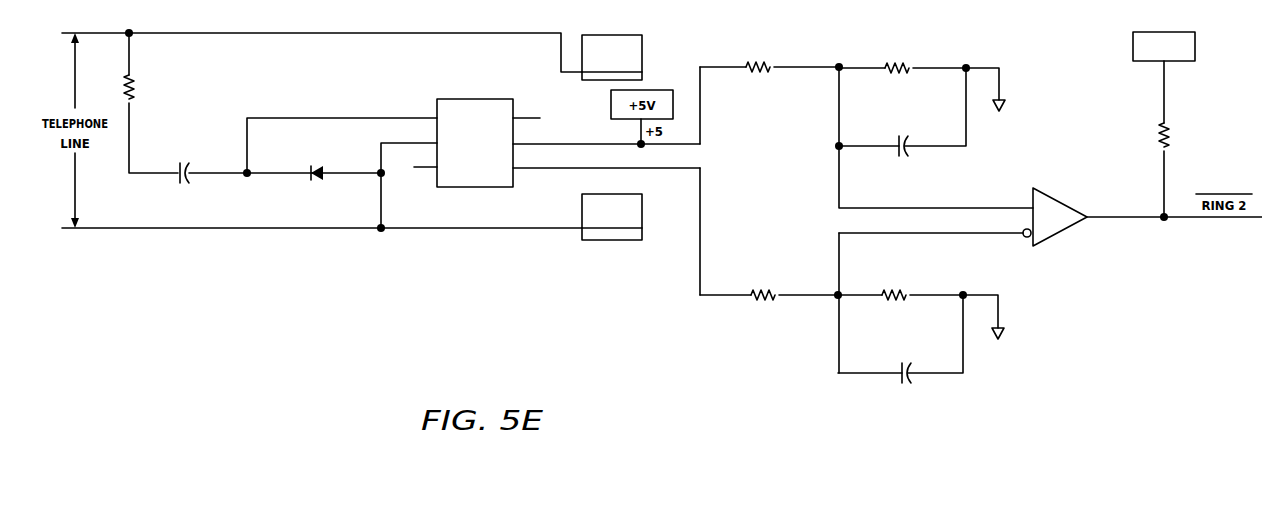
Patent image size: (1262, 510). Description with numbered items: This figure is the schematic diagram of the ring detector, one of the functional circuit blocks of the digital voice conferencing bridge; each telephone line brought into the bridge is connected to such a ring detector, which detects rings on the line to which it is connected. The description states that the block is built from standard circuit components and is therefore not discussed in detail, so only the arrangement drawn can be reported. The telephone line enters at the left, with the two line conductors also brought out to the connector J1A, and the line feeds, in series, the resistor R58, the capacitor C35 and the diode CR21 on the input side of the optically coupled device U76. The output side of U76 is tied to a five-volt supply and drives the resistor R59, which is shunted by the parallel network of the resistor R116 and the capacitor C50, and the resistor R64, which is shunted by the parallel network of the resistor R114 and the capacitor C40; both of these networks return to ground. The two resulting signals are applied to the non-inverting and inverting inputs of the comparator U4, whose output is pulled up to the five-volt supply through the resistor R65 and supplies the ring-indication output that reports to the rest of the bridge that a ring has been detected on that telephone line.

The resistor 7.5K R58 is at (151, 101).
The capacitor 0.47uF C35 is at (203, 176).
The diode 1N4001 CR21 is at (316, 169).
The optocoupler 4N32 U76 is at (557, 146).
The connector J1A is at (612, 127).
The resistor 4.7K R59 is at (771, 70).
The resistor 2K R116 is at (922, 79).
The capacitor 0.10uF C50 is at (902, 125).
The comparator LM3302 U4 is at (1050, 225).
The resistor 4.7K pull-up R65 is at (1167, 126).
The resistor 10K R64 is at (771, 296).
The resistor 2.2M R114 is at (921, 308).
The capacitor 3.30uF C40 is at (900, 354).